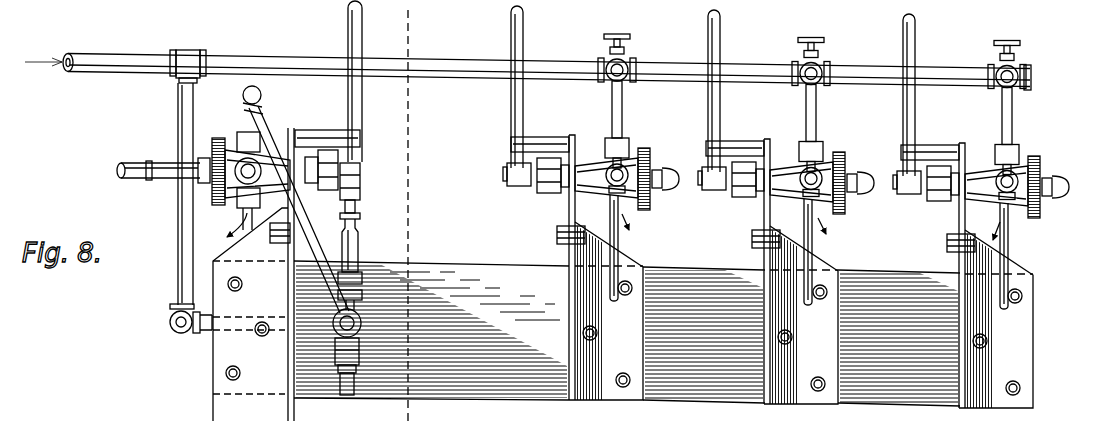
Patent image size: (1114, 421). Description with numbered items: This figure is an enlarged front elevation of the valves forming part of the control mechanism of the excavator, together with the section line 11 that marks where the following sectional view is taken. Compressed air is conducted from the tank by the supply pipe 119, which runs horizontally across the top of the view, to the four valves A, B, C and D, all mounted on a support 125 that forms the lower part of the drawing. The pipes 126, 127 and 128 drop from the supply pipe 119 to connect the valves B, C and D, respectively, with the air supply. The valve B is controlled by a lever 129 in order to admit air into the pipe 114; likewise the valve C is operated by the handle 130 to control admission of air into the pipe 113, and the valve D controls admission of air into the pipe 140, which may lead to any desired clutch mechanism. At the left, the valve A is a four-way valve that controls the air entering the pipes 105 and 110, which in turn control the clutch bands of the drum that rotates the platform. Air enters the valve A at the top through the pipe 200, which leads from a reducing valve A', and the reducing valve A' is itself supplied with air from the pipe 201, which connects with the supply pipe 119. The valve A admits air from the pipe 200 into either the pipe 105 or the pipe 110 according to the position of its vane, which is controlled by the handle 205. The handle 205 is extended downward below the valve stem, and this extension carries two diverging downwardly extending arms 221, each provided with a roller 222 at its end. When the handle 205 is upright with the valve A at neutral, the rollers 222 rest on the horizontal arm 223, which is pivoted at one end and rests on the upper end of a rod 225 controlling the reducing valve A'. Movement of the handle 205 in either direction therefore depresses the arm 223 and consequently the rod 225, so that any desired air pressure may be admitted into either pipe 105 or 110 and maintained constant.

The section line 11 is at (453, 25).
The pipe 105 is at (162, 161).
The pipe 110 is at (130, 163).
The pipe 113 is at (812, 254).
The pipe 114 is at (619, 251).
The supply pipe 119 is at (127, 59).
The support 125 is at (483, 271).
The pipe 126 is at (623, 106).
The pipe 127 is at (820, 108).
The pipe 128 is at (1013, 118).
The lever 129 is at (512, 105).
The handle 130 is at (717, 110).
The pipe 140 is at (1008, 244).
The pipe 200 is at (265, 130).
The pipe 201 is at (186, 100).
The handle 205 is at (353, 36).
The diverging arms 221 is at (350, 182).
The roller 222 is at (356, 197).
The horizontal arm 223 is at (358, 216).
The rod 225 is at (359, 224).
The four-way valve A is at (281, 263).
The reducing valve A' is at (370, 352).
The valve B is at (597, 151).
The valve C is at (788, 166).
The valve D is at (983, 168).